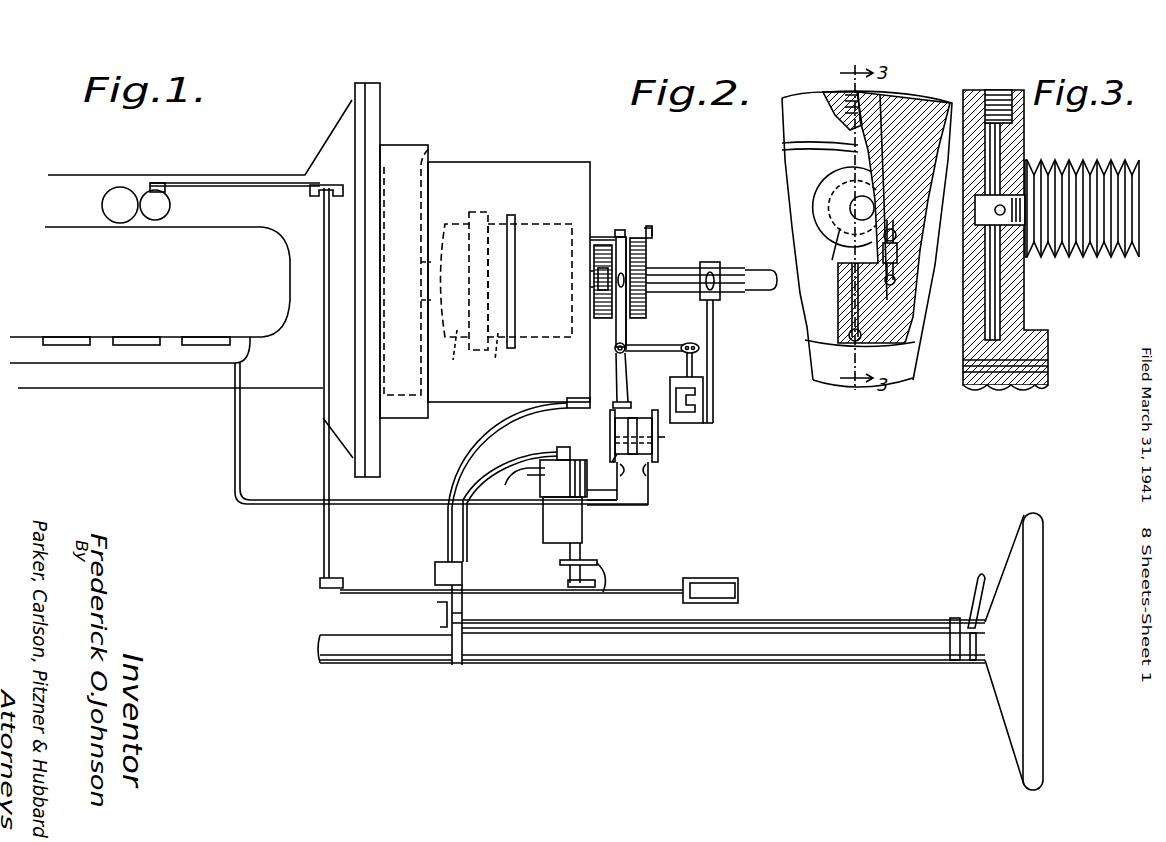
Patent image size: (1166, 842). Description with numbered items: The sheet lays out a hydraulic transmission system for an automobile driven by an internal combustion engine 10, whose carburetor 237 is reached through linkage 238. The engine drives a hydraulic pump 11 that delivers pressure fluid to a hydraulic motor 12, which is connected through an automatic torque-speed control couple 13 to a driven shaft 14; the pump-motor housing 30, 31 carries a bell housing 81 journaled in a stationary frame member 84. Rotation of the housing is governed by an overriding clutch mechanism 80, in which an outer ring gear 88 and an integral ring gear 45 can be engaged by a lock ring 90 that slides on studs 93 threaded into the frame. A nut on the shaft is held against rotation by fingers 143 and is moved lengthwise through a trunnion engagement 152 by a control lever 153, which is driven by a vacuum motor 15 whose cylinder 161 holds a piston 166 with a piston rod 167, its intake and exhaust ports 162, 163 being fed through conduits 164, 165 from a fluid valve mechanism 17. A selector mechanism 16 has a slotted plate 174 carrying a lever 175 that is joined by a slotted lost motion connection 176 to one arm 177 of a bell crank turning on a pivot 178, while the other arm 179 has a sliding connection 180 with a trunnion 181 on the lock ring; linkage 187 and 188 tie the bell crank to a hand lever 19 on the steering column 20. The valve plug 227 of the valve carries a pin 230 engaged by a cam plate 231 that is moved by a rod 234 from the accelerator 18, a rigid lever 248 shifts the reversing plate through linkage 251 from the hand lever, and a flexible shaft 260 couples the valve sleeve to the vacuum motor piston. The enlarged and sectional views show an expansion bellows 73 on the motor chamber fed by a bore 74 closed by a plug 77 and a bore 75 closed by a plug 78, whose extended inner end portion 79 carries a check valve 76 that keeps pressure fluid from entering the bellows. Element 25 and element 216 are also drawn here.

In FIG. 1, the internal combustion automobile engine 10 is at (88, 275).
In FIG. 1, the carburetor 237 is at (158, 214).
In FIG. 1, the housing 25 is at (425, 160).
In FIG. 1, the hydraulic pump 11 is at (455, 214).
In FIG. 1, the hydraulic motor 12 is at (502, 212).
In FIG. 1, the bell housing 81 is at (532, 240).
In FIG. 1, the automatic torque-speed control couple 13 is at (563, 214).
In FIG. 1, the housing 30 is at (455, 357).
In FIG. 1, the housing 31 is at (497, 359).
In FIG. 1, the stationary frame member 84 is at (582, 194).
In FIG. 1, the outer ring gear 88 is at (600, 284).
In FIG. 1, the trunnion 181 is at (600, 293).
In FIG. 1, the lock ring 90 is at (616, 260).
In FIG. 1, the sliding connection 180 is at (630, 240).
In FIG. 1, the ring gear 45 is at (641, 268).
In FIG. 1, the studs 93 is at (648, 230).
In FIG. 1, the overriding clutch mechanism 80 is at (658, 225).
In FIG. 1, the fingers 143 is at (668, 268).
In FIG. 1, the trunnion engagement 152 is at (714, 262).
In FIG. 1, the shaft 14 is at (757, 270).
In FIG. 1, the arm of bell crank 179 is at (616, 328).
In FIG. 1, the arm of bell crank 177 is at (643, 345).
In FIG. 1, the slotted lost motion connection 176 is at (690, 343).
In FIG. 1, the pivot 178 is at (619, 352).
In FIG. 1, the control lever 153 is at (715, 327).
In FIG. 1, the lever 175 is at (700, 365).
In FIG. 1, the slotted plate 174 is at (704, 379).
In FIG. 1, the selector mechanism 16 is at (710, 415).
In FIG. 1, the vacuum motor 15 is at (665, 451).
In FIG. 1, the cylinder 161 is at (636, 425).
In FIG. 1, the piston rod 167 is at (666, 441).
In FIG. 1, the piston 166 is at (616, 448).
In FIG. 1, the intake port 162 is at (621, 470).
In FIG. 1, the exhaust port 163 is at (652, 473).
In FIG. 1, the conduit 165 is at (655, 490).
In FIG. 1, the conduit 164 is at (620, 497).
In FIG. 1, the fluid valve mechanism 17 is at (599, 521).
In FIG. 1, the flexible shaft 260 is at (562, 447).
In FIG. 1, the linkage 187 is at (505, 438).
In FIG. 1, the linkage 251 is at (494, 478).
In FIG. 1, the rigid lever 248 is at (565, 488).
In FIG. 1, the valve plug 227 is at (580, 549).
In FIG. 1, the pin 230 is at (560, 565).
In FIG. 1, the rod 234 is at (612, 590).
In FIG. 1, the cam plate 231 is at (597, 590).
In FIG. 1, the linkage 238 is at (325, 390).
In FIG. 1, the pipe 216 is at (240, 447).
In FIG. 1, the accelerator 18 is at (715, 580).
In FIG. 1, the steering column 20 is at (822, 642).
In FIG. 1, the linkage 188 is at (755, 625).
In FIG. 1, the hand lever 19 is at (975, 578).
In FIG. 2, the plug 78 is at (915, 100).
In FIG. 2, the plug 77 is at (848, 105).
In FIG. 3, the plug 77 is at (1000, 92).
In FIG. 2, the bore 74 is at (850, 155).
In FIG. 3, the bore 74 is at (995, 142).
In FIG. 2, the bore 75 is at (896, 193).
In FIG. 2, the check valve 76 is at (896, 247).
In FIG. 2, the extended inner end portion 79 is at (898, 263).
In FIG. 2, the expansion bellows 73 is at (835, 245).
In FIG. 3, the expansion bellows 73 is at (1065, 163).